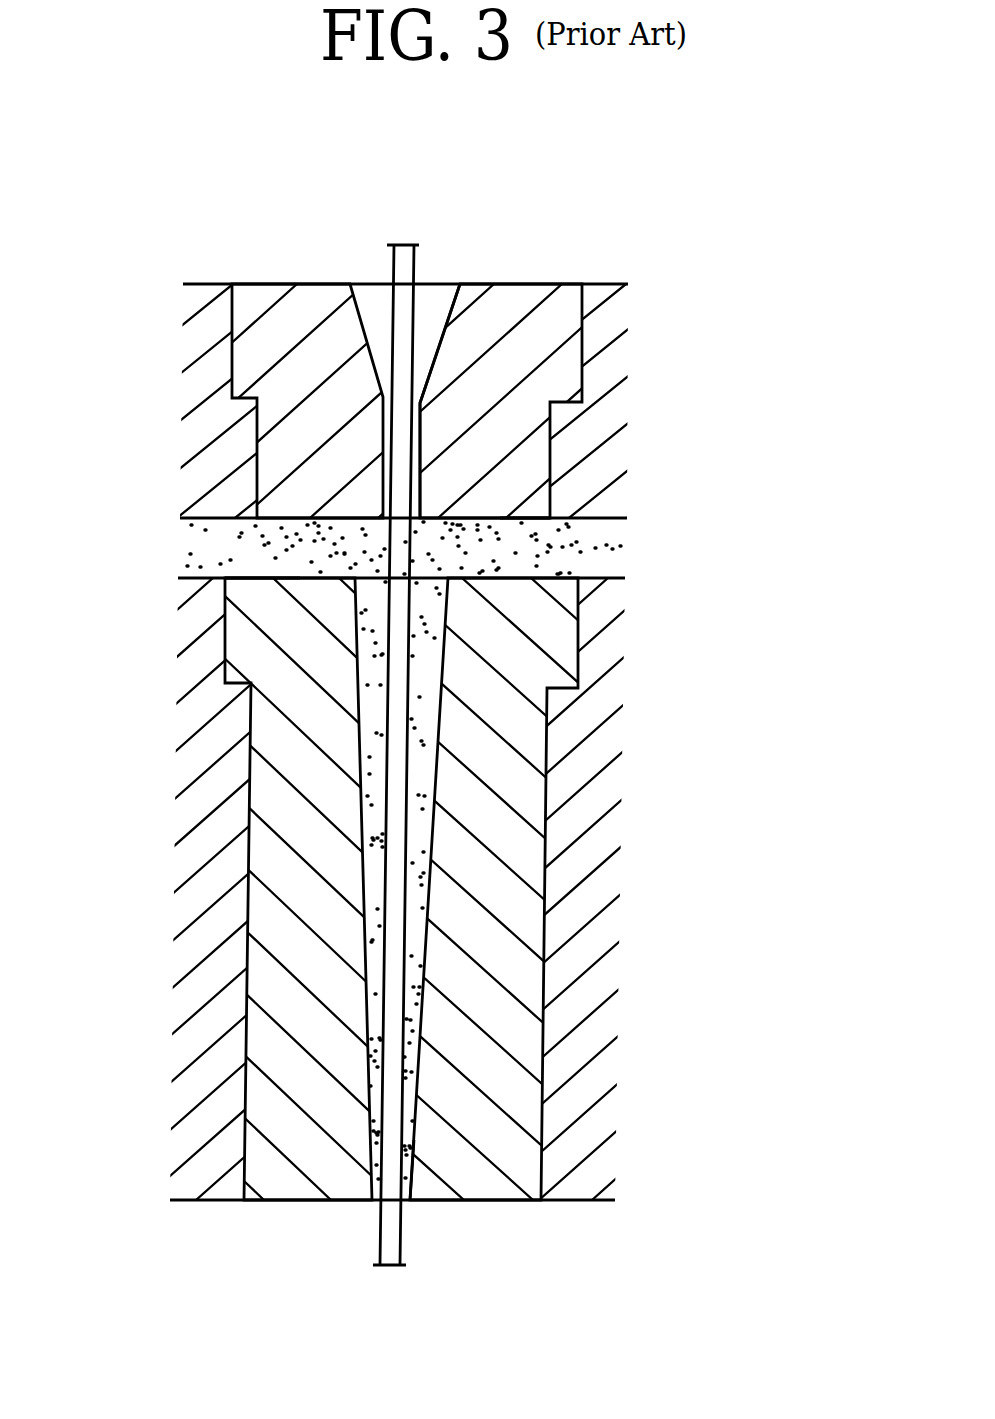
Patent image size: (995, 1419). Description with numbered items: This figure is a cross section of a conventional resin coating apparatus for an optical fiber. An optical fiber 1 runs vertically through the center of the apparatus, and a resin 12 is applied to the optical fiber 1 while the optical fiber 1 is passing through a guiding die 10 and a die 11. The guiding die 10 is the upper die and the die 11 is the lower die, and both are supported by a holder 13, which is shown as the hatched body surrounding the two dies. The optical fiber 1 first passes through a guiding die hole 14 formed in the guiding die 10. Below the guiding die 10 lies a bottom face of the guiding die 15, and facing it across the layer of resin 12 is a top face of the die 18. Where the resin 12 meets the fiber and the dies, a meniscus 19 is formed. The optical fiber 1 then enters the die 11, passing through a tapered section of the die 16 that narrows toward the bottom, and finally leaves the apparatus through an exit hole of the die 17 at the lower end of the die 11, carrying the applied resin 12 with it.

The optical fiber 1 is at (415, 280).
The guiding die 10 is at (540, 357).
The die 11 is at (507, 752).
The resin 12 is at (600, 550).
The holder 13 is at (583, 868).
The guiding die hole 14 is at (423, 438).
The bottom face of the guiding die 15 is at (512, 520).
The tapered section of the die 16 is at (423, 940).
The exit hole of the die 17 is at (413, 1183).
The top face of the die 18 is at (283, 583).
The meniscus 19 is at (383, 520).